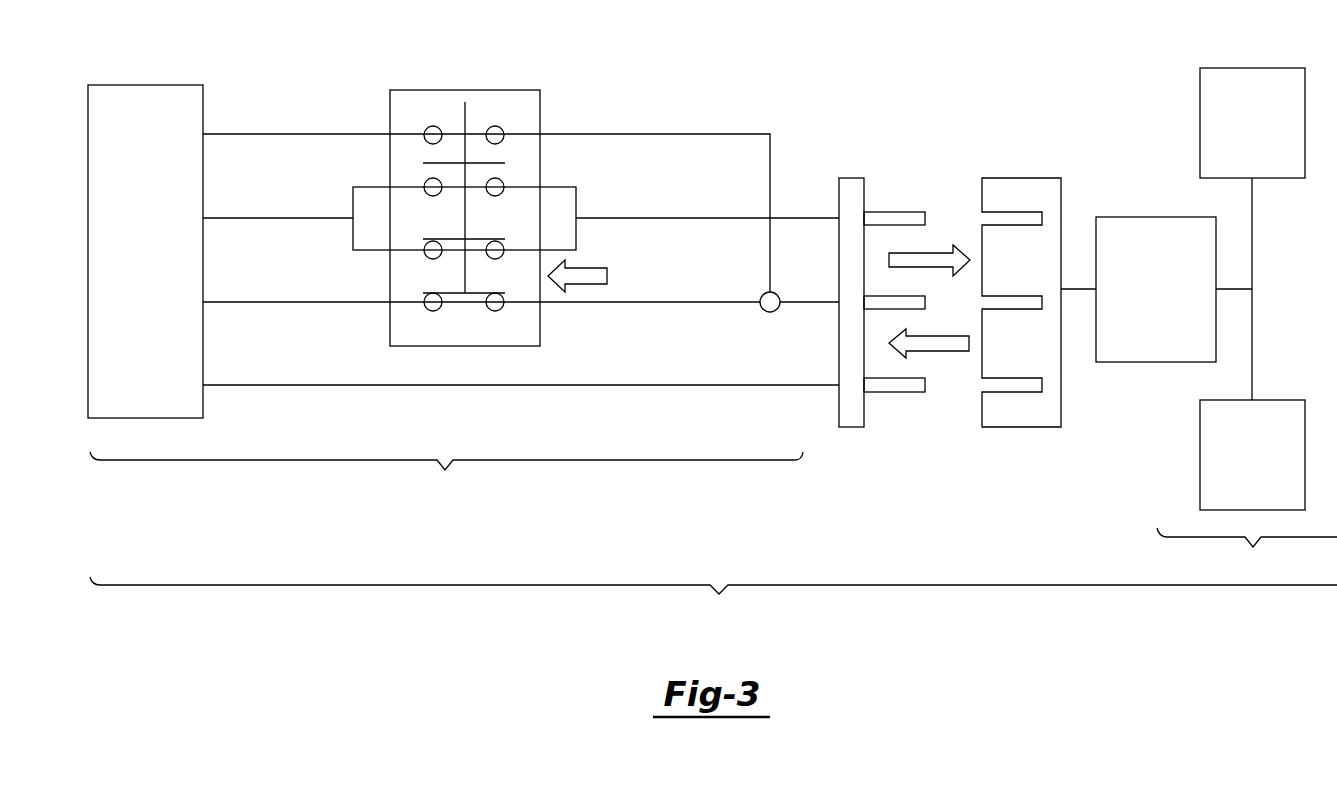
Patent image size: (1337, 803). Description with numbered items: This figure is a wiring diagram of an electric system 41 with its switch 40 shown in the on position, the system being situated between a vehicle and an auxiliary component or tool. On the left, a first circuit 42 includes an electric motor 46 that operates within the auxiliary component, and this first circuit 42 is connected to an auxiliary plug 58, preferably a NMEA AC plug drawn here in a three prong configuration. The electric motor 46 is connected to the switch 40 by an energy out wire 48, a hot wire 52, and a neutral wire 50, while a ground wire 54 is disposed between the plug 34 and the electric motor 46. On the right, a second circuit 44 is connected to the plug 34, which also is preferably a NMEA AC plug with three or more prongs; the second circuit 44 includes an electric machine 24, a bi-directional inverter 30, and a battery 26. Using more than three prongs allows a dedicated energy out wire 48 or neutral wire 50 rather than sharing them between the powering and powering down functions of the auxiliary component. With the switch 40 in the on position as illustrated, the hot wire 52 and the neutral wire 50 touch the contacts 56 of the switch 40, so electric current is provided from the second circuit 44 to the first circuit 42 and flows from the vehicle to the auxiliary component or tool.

The electric machine 24 is at (1276, 400).
The battery 26 is at (1253, 68).
The bi-directional inverter 30 is at (1157, 217).
The plug 34 is at (1020, 428).
The switch 40 is at (503, 90).
The electric system 41 is at (713, 601).
The first circuit 42 is at (446, 475).
The second circuit 44 is at (1247, 552).
The electric motor 46 is at (147, 85).
The energy out wire 48 is at (258, 134).
The neutral wire 50 is at (307, 218).
The hot wire 52 is at (260, 302).
The ground wire 54 is at (305, 385).
The contacts 56 is at (432, 126).
The auxiliary plug 58 is at (850, 178).